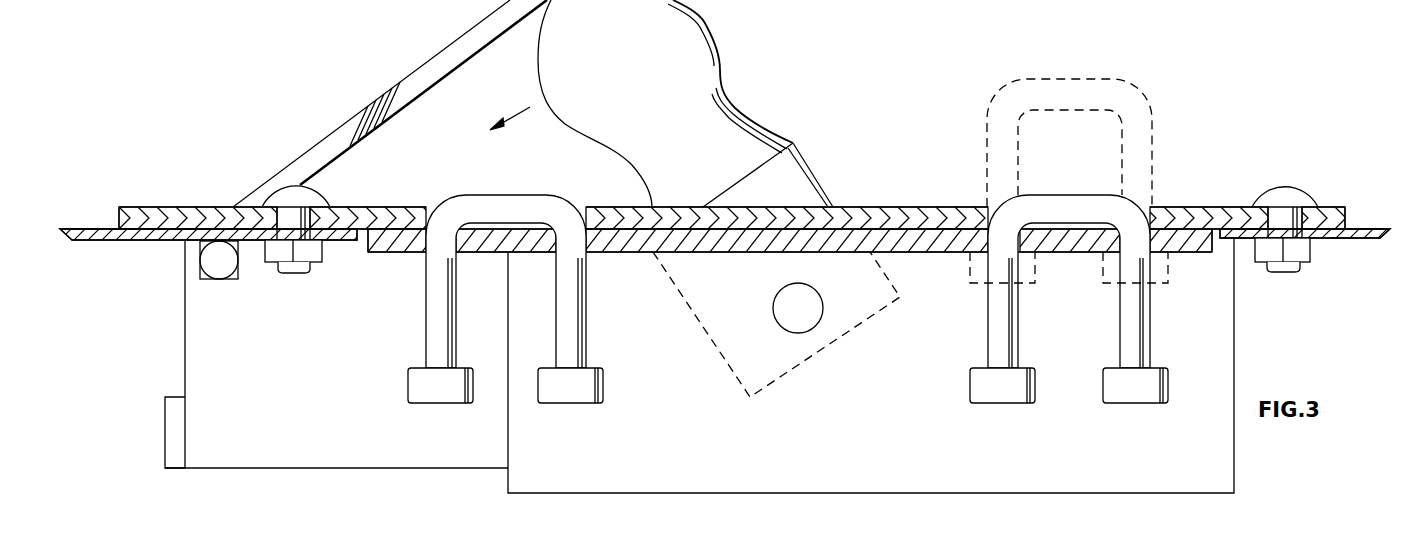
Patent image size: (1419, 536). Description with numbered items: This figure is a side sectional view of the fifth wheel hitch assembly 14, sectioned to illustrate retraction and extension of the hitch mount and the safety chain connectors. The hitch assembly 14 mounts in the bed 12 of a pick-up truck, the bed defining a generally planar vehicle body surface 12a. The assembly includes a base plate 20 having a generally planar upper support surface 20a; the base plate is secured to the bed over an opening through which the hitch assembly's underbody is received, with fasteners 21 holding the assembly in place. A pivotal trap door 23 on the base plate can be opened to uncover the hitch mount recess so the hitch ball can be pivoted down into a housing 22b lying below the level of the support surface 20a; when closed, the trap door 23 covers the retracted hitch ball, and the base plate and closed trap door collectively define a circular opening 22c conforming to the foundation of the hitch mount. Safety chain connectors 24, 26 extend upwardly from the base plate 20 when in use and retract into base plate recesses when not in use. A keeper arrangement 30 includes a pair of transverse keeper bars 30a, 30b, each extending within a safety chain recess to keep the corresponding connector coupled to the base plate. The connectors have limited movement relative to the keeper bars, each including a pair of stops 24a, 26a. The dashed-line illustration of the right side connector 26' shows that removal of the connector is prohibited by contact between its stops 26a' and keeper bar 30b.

The bed 12 is at (92, 241).
The vehicle body surface 12a is at (1377, 229).
The fifth wheel hitch assembly 14 is at (272, 482).
The base plate 20 is at (174, 207).
The upper support surface 20a is at (1193, 207).
The fasteners 21 is at (290, 186).
The housing 22b is at (871, 365).
The circular opening 22c is at (798, 320).
The trap door 23 is at (407, 76).
The safety chain connector 24 is at (463, 196).
The stops 24a is at (408, 388).
The safety chain connector 26 is at (1069, 253).
The right side safety chain connector 26' is at (1069, 112).
The stops 26a is at (1069, 420).
The stops 26a' is at (1067, 299).
The keeper arrangement 30 is at (624, 252).
The keeper bar 30a is at (500, 253).
The keeper bar 30b is at (1060, 252).